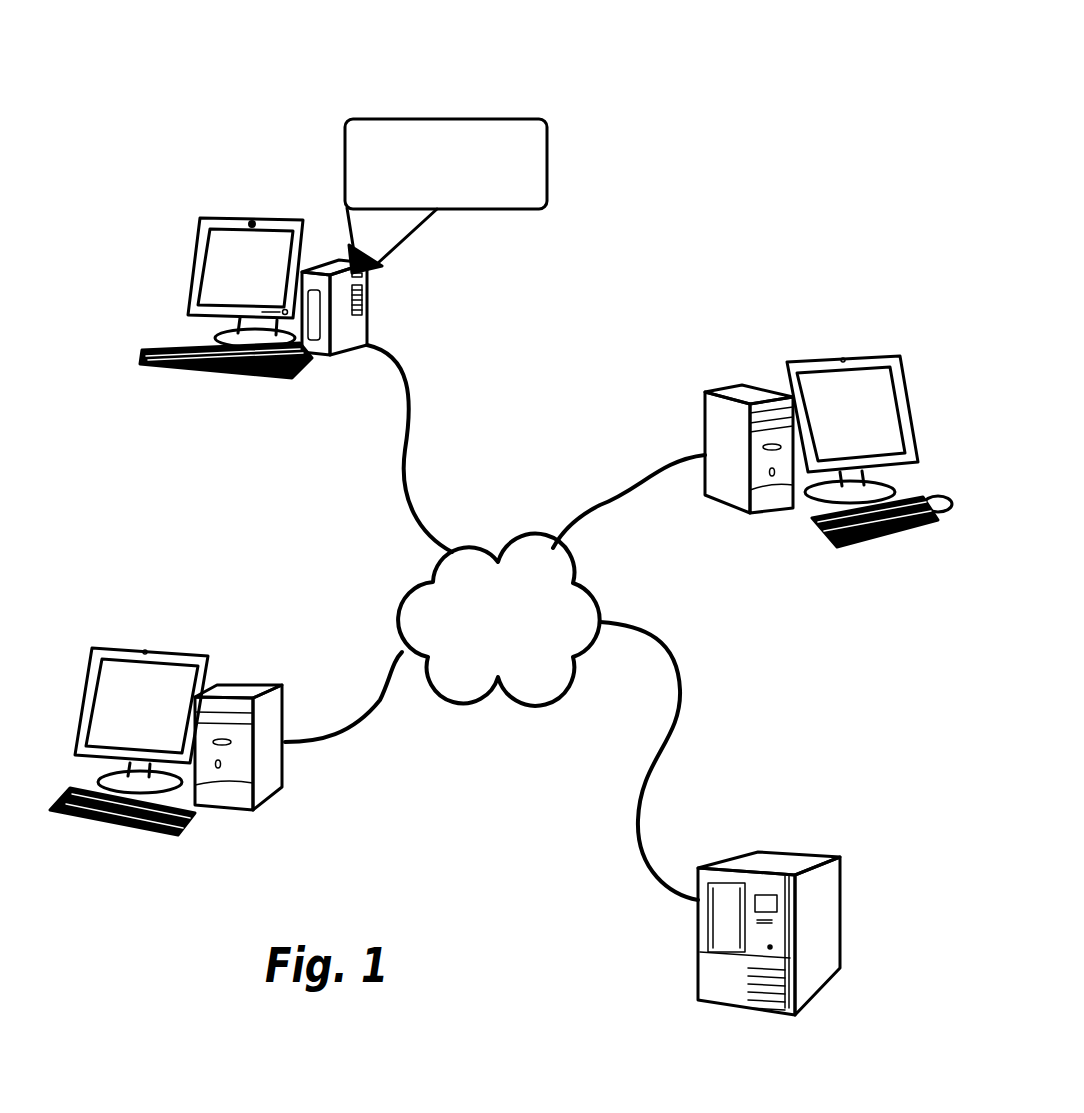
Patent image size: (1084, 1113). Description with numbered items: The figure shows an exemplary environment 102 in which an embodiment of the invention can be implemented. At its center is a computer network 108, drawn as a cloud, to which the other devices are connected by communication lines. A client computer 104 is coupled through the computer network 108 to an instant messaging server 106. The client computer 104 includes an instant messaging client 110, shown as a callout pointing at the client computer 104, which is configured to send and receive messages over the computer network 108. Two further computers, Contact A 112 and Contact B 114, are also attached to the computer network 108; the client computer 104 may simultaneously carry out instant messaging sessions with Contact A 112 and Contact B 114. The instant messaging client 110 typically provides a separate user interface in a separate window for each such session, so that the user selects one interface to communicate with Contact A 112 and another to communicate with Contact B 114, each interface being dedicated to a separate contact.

The environment 102 is at (642, 62).
The client computer 104 is at (200, 250).
The instant messaging server 106 is at (840, 920).
The computer network 108 is at (467, 697).
The instant messaging client 110 is at (547, 160).
The Contact A 112 is at (831, 355).
The Contact B 114 is at (181, 650).